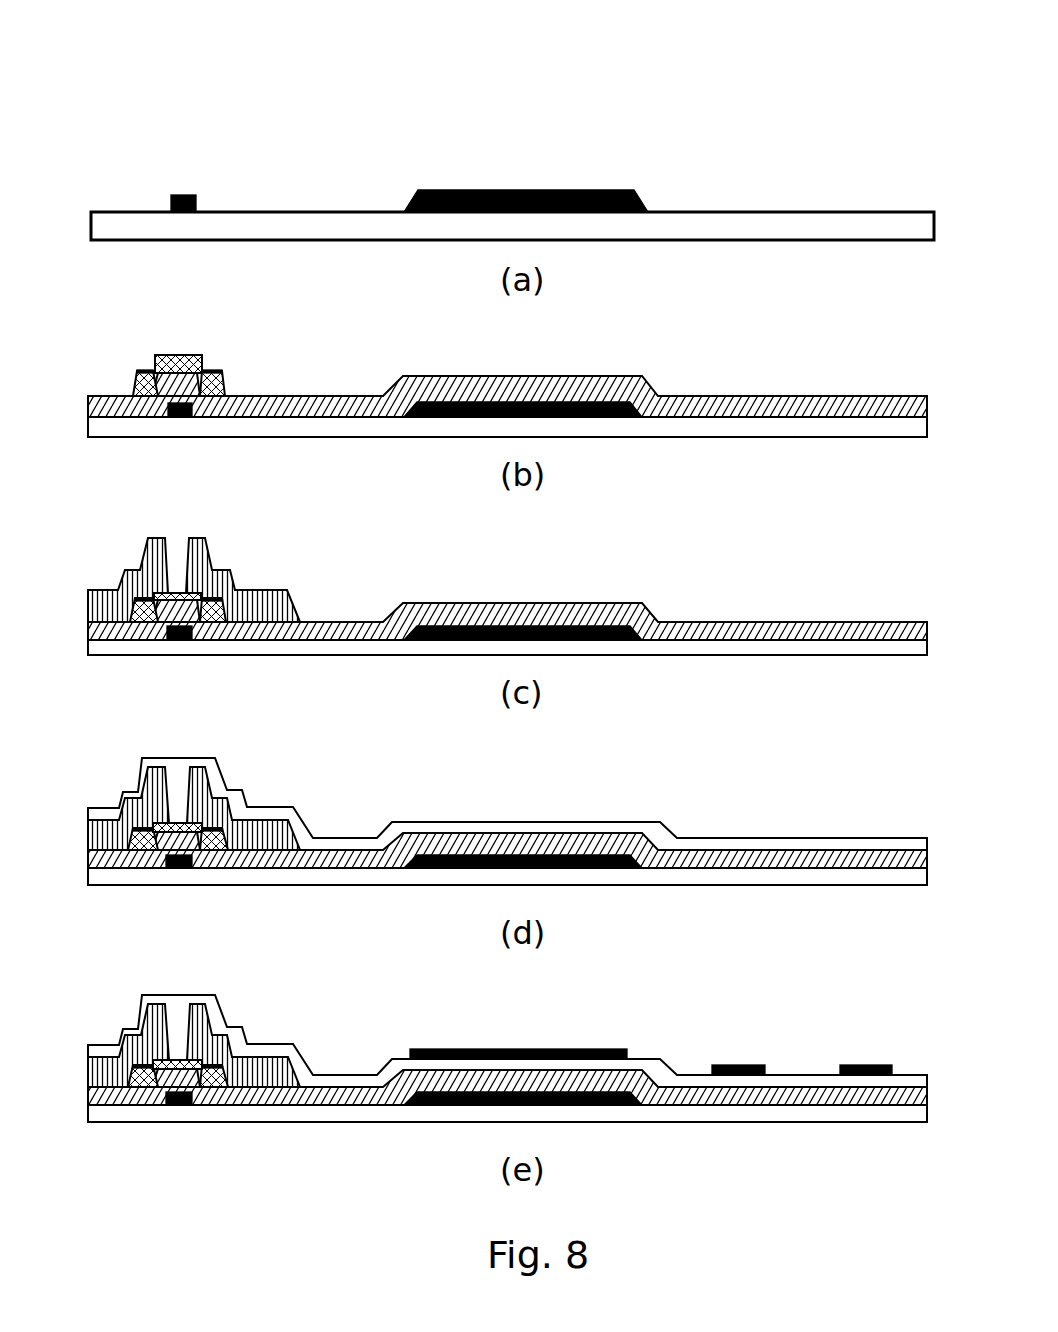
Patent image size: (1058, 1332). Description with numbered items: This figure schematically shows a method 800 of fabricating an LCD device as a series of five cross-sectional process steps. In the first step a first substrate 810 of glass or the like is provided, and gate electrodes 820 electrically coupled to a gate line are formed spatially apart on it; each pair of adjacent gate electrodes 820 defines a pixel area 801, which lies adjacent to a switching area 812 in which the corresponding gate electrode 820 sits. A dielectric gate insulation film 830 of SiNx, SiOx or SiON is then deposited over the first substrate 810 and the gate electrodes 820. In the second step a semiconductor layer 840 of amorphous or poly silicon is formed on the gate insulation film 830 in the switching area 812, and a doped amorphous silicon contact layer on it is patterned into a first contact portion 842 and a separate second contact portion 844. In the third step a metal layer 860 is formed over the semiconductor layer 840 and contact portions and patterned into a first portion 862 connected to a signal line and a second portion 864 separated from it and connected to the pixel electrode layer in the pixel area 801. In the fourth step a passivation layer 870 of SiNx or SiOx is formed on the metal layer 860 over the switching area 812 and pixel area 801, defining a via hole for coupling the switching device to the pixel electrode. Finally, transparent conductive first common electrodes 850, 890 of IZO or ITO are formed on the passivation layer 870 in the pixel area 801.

The method 800 is at (523, 77).
The pixel area 801 is at (688, 172).
The first substrate 810 is at (822, 226).
The switching area 812 is at (238, 197).
The gate electrode 820 is at (184, 194).
The gate insulation film 830 is at (832, 396).
The semiconductor layer 840 is at (174, 356).
The first contact portion 842 is at (143, 370).
The second contact portion 844 is at (212, 370).
The first common electrode 850 is at (570, 1049).
The metal layer 860 is at (310, 602).
The first portion 862 is at (137, 582).
The second portion 864 is at (218, 582).
The passivation layer 870 is at (840, 839).
The first common electrode 890 is at (740, 1065).